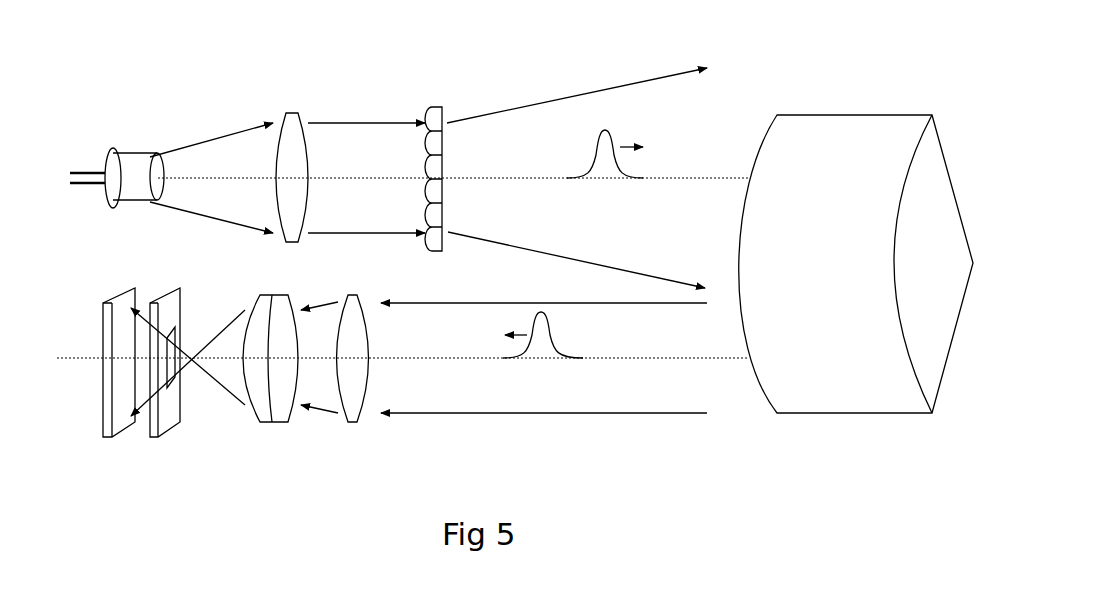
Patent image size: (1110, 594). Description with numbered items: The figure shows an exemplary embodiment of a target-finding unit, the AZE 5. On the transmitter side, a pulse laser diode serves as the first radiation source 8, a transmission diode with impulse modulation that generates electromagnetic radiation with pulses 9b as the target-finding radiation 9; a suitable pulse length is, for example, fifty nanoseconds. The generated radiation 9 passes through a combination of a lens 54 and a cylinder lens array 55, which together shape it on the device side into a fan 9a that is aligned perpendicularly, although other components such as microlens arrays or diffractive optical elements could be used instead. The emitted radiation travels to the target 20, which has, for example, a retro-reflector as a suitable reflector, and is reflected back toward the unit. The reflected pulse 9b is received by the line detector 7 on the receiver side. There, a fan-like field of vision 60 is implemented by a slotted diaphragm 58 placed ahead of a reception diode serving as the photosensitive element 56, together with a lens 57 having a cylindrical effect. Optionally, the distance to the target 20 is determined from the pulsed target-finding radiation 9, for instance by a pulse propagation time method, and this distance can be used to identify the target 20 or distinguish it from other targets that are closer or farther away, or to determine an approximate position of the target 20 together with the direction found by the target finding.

The AZE 5 is at (440, 52).
The line detector 7 is at (203, 252).
The first radiation source 8 is at (132, 172).
The target-finding radiation 9 is at (218, 143).
The fan 9a is at (533, 133).
The pulse 9b is at (607, 143).
The target 20 is at (812, 145).
The lens 54 is at (295, 143).
The cylinder lens array 55 is at (433, 143).
The photosensitive element 56 is at (120, 300).
The lens 57 is at (323, 282).
The slotted diaphragm 58 is at (177, 313).
The fan-like field of vision 60 is at (146, 451).